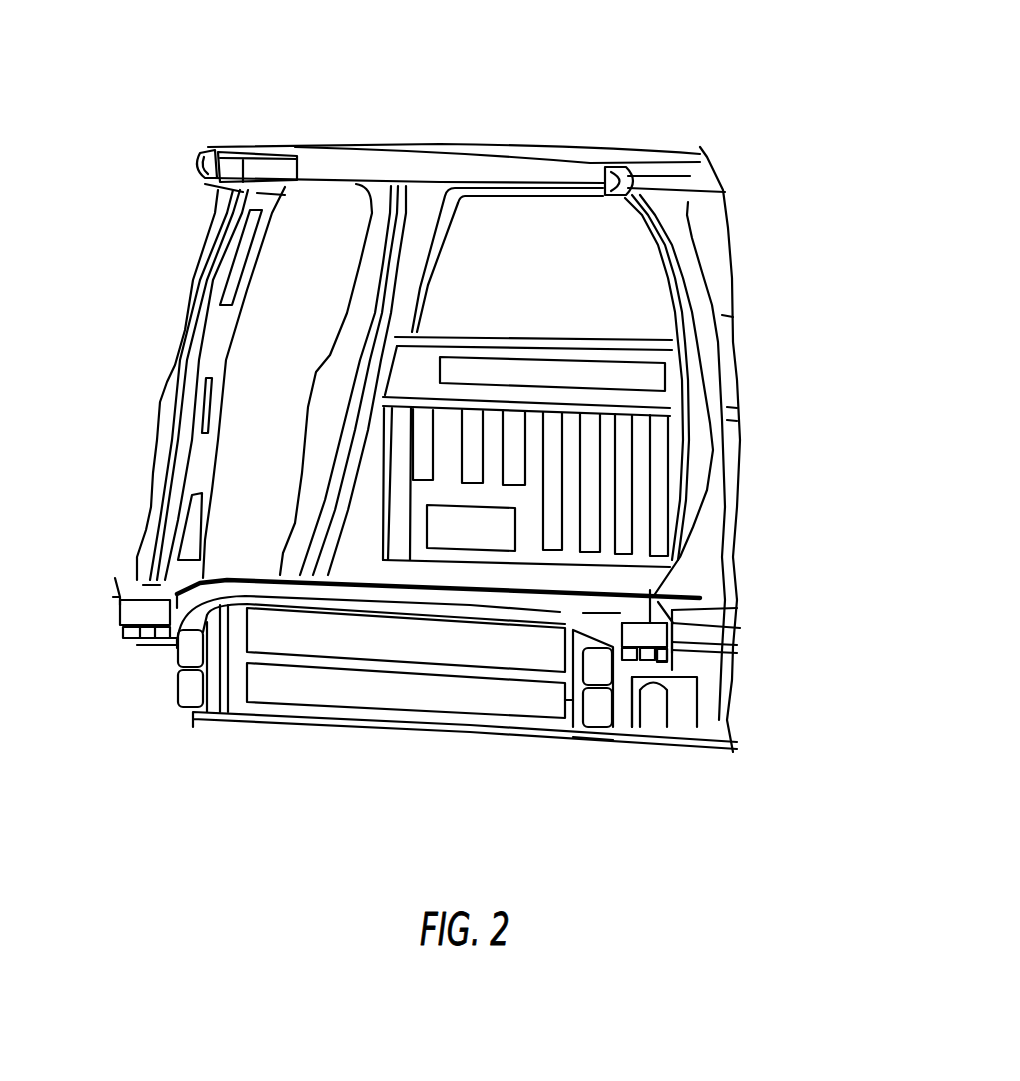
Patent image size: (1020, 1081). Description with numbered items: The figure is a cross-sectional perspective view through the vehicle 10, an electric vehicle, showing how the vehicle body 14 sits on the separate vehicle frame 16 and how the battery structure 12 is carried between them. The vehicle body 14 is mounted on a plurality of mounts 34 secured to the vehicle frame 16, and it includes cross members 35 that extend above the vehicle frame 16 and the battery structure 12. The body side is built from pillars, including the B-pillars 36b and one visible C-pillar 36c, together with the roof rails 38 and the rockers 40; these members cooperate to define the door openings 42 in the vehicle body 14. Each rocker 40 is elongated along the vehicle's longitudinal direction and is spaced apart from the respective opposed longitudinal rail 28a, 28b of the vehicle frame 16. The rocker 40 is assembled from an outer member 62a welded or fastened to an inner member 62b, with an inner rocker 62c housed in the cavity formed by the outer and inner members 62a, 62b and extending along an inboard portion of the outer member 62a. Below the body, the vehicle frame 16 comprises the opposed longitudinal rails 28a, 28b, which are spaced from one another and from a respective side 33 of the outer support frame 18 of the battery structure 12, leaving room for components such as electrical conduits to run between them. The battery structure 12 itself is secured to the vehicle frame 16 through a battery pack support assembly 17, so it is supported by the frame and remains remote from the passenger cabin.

The vehicle 10 is at (726, 76).
The vehicle body 14 is at (572, 135).
The roof rails 38 is at (208, 154).
The door openings 42 is at (308, 284).
The B-pillars 36b is at (193, 358).
The C-pillars 36c is at (437, 230).
The side of the outer support frame 33 is at (562, 628).
The outer support frame 18 is at (520, 617).
The rockers 40 is at (114, 613).
The cross members 35 is at (445, 610).
The longitudinal rail 28a is at (190, 677).
The longitudinal rail 28b is at (618, 697).
The vehicle frame 16 is at (186, 730).
The battery structure 12 is at (553, 698).
The battery pack support assembly 17 is at (597, 740).
The mounts 34 is at (680, 692).
The outer member 62a is at (710, 644).
The inner member 62b is at (602, 607).
The inner rocker 62c is at (658, 657).